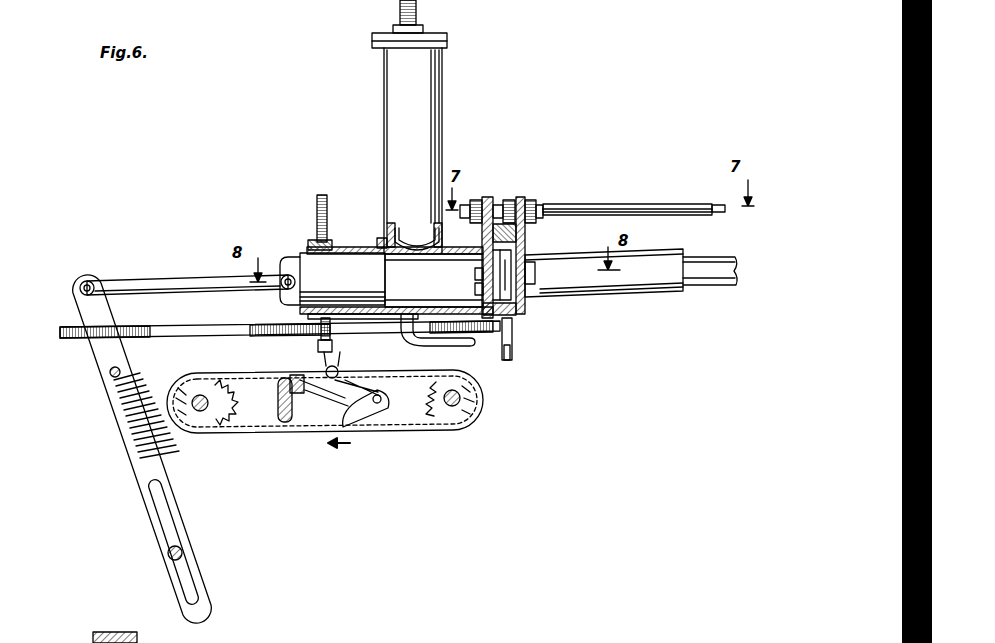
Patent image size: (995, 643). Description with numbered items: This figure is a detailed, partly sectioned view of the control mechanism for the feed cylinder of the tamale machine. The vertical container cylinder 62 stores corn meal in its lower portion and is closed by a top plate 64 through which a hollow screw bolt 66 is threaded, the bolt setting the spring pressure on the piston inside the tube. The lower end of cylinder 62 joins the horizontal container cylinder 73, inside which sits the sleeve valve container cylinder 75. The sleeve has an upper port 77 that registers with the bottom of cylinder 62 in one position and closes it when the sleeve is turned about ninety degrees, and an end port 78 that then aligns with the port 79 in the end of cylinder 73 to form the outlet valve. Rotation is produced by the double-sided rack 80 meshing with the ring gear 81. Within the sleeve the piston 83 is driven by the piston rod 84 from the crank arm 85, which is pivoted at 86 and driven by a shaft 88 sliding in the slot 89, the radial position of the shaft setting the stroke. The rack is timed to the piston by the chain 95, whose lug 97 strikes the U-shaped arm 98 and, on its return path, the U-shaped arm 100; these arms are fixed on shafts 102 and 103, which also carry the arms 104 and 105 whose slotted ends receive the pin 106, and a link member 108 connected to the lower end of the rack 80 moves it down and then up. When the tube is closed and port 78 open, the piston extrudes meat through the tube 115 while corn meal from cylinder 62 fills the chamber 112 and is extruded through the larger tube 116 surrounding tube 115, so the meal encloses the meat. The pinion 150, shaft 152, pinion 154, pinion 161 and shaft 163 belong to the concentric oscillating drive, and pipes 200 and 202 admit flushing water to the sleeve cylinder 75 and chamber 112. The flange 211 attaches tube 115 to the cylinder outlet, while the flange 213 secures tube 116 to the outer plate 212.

The vertical container cylinder 62 is at (418, 92).
The closing top plate 64 is at (447, 40).
The hollow screw bolt 66 is at (400, 8).
The horizontal container cylinder 73 is at (358, 247).
The sleeve valve container cylinder 75 is at (292, 252).
The upper opening or port 77 is at (420, 262).
The end opening or port 78 is at (478, 273).
The end opening or port 79 is at (478, 289).
The double-sided rack 80 is at (317, 202).
The ring gear 81 is at (318, 242).
The piston 83 is at (342, 279).
The piston rod 84 is at (168, 278).
The crank arm 85 is at (118, 427).
The pivot 86 is at (120, 370).
The shaft 88 is at (182, 553).
The slot 89 is at (170, 516).
The chain 95 is at (238, 433).
The lug 97 is at (262, 347).
The U-shaped arm 98 is at (266, 388).
The U-shaped arm 100 is at (362, 418).
The shaft 102 is at (285, 422).
The shaft 103 is at (398, 415).
The arm 104 is at (326, 397).
The arm 105 is at (367, 384).
The pin 106 is at (339, 371).
The link member 108 is at (322, 342).
The chamber 112 is at (515, 322).
The tube 115 is at (720, 257).
The tube 116 is at (610, 292).
The pinion 150 is at (509, 200).
The shaft 152 is at (720, 205).
The pinion 154 is at (476, 200).
The pinion 161 is at (531, 200).
The shaft 163 is at (627, 204).
The pipe 200 is at (463, 347).
The pipe 202 is at (512, 352).
The flange 211 is at (513, 253).
The outer plate 212 is at (520, 234).
The flange 213 is at (535, 272).